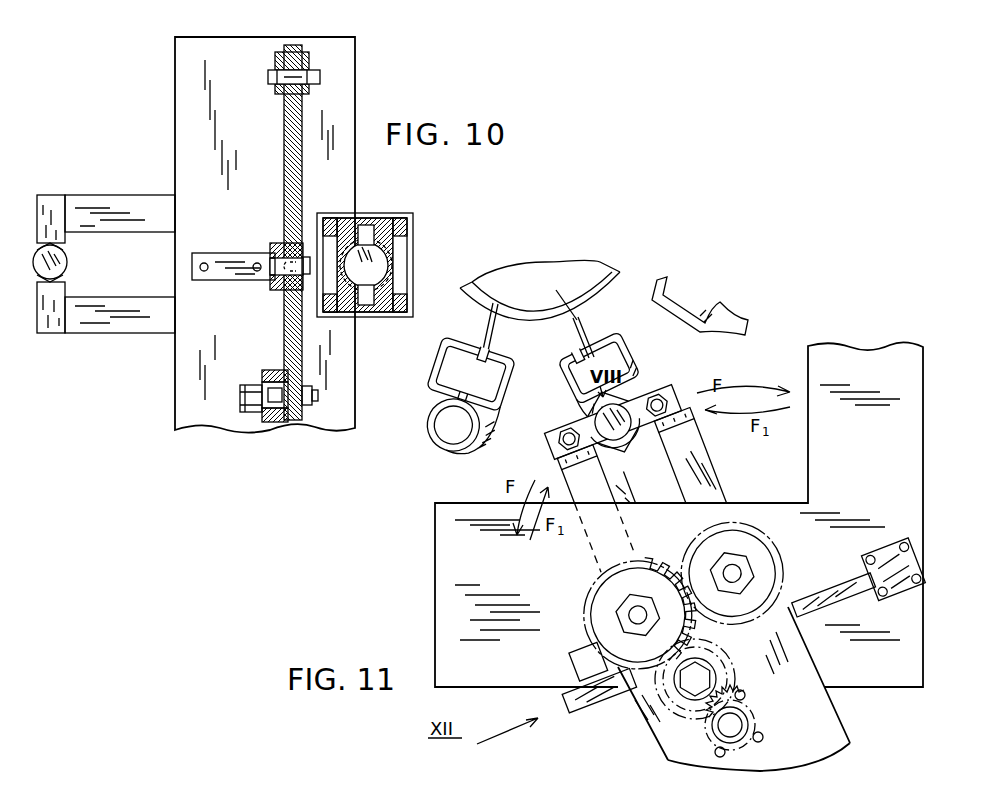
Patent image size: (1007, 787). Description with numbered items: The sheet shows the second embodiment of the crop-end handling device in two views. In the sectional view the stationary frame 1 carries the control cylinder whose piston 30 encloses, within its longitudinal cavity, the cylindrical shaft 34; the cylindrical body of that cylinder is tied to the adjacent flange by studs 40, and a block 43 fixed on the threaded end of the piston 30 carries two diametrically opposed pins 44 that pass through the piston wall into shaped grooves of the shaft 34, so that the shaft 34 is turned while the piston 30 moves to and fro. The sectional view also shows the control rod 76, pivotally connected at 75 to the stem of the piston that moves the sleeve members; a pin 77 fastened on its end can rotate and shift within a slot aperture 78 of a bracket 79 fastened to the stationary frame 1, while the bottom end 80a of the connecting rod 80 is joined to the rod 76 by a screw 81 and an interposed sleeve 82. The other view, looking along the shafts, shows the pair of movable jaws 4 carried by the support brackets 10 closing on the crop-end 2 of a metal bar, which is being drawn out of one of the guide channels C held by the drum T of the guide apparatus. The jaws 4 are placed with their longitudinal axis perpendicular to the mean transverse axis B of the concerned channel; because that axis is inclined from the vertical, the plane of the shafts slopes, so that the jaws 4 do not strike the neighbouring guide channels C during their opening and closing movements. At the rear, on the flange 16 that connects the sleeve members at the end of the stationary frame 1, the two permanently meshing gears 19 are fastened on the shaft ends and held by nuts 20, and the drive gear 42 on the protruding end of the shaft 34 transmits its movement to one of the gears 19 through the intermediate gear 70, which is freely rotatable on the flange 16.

In FIG. 10, the stationary frame 1 is at (190, 100).
In FIG. 11, the stationary frame 1 is at (440, 572).
In FIG. 10, the crop-end 2 is at (57, 266).
In FIG. 11, the crop-end 2 is at (620, 402).
In FIG. 10, the movable jaws 4 is at (50, 215).
In FIG. 11, the movable jaws 4 is at (640, 412).
In FIG. 10, the support brackets 10 is at (137, 212).
In FIG. 11, the support brackets 10 is at (595, 490).
In FIG. 11, the flange 16 is at (843, 718).
In FIG. 11, the gears 19 is at (658, 560).
In FIG. 11, the nuts 20 is at (628, 610).
In FIG. 10, the piston 30 is at (392, 253).
In FIG. 10, the cylindrical shaft 34 is at (380, 268).
In FIG. 10, the studs 40 is at (337, 218).
In FIG. 11, the drive gear 42 is at (757, 720).
In FIG. 10, the block 43 is at (380, 220).
In FIG. 10, the pins 44 is at (368, 232).
In FIG. 11, the intermediate gear 70 is at (716, 670).
In FIG. 10, the pivot connection 75 is at (290, 72).
In FIG. 10, the control rod 76 is at (299, 130).
In FIG. 11, the control rod 76 is at (840, 600).
In FIG. 10, the pin 77 is at (250, 398).
In FIG. 11, the pin 77 is at (585, 655).
In FIG. 10, the slot aperture 78 is at (262, 380).
In FIG. 10, the bracket 79 is at (280, 370).
In FIG. 11, the bracket 79 is at (585, 690).
In FIG. 10, the connecting rod 80 is at (215, 258).
In FIG. 10, the bottom end of connecting rod 80a is at (276, 271).
In FIG. 10, the screw 81 is at (307, 276).
In FIG. 10, the sleeve 82 is at (280, 245).
In FIG. 11, the mean transverse axis B is at (558, 371).
In FIG. 11, the drum T is at (490, 308).
In FIG. 11, the guide channels C is at (549, 387).